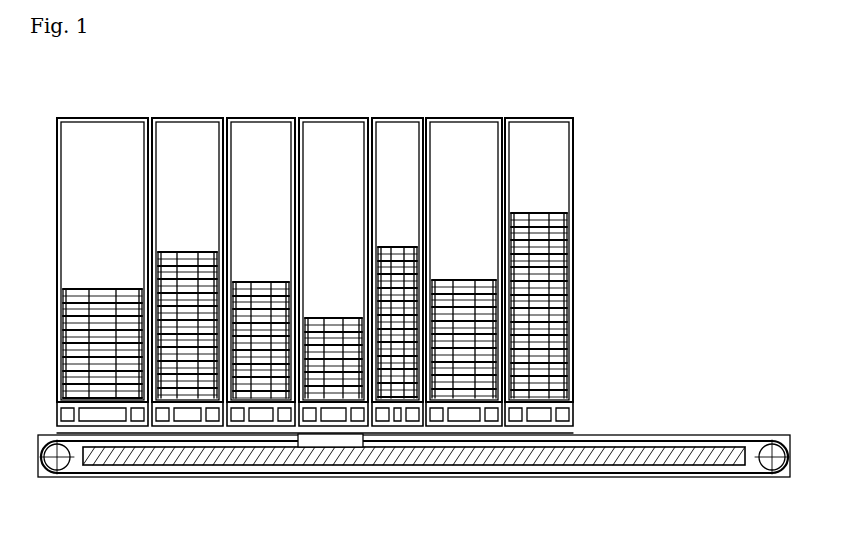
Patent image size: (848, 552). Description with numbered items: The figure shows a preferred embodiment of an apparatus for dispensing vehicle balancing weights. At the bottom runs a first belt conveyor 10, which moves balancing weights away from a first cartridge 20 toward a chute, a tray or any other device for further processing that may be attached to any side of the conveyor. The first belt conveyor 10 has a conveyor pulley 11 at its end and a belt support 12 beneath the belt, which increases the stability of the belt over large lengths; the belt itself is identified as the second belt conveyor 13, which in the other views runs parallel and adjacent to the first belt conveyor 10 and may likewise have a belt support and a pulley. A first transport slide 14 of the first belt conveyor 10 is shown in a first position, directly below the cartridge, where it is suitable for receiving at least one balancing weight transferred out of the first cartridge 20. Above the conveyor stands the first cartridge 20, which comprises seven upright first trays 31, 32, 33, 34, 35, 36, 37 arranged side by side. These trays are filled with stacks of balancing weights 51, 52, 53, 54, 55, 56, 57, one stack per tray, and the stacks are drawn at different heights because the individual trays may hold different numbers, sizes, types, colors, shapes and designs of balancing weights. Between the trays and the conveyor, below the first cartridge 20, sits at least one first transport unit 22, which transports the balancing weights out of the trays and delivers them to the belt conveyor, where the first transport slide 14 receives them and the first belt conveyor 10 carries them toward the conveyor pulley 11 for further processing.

The first belt conveyor 10 is at (668, 478).
The conveyor pulley 11 is at (778, 446).
The belt support 12 is at (398, 466).
The second belt conveyor 13 is at (757, 435).
The first transport slide 14 is at (335, 448).
The first cartridge 20 is at (600, 142).
The first transport unit 22 is at (586, 415).
The first tray 31 is at (541, 138).
The first tray 32 is at (464, 138).
The first tray 33 is at (398, 138).
The first tray 34 is at (334, 138).
The first tray 35 is at (259, 138).
The first tray 36 is at (189, 138).
The first tray 37 is at (104, 138).
The balancing weights 51 is at (541, 212).
The balancing weights 52 is at (464, 278).
The balancing weights 53 is at (399, 246).
The balancing weights 54 is at (334, 316).
The balancing weights 55 is at (259, 280).
The balancing weights 56 is at (189, 250).
The balancing weights 57 is at (104, 287).